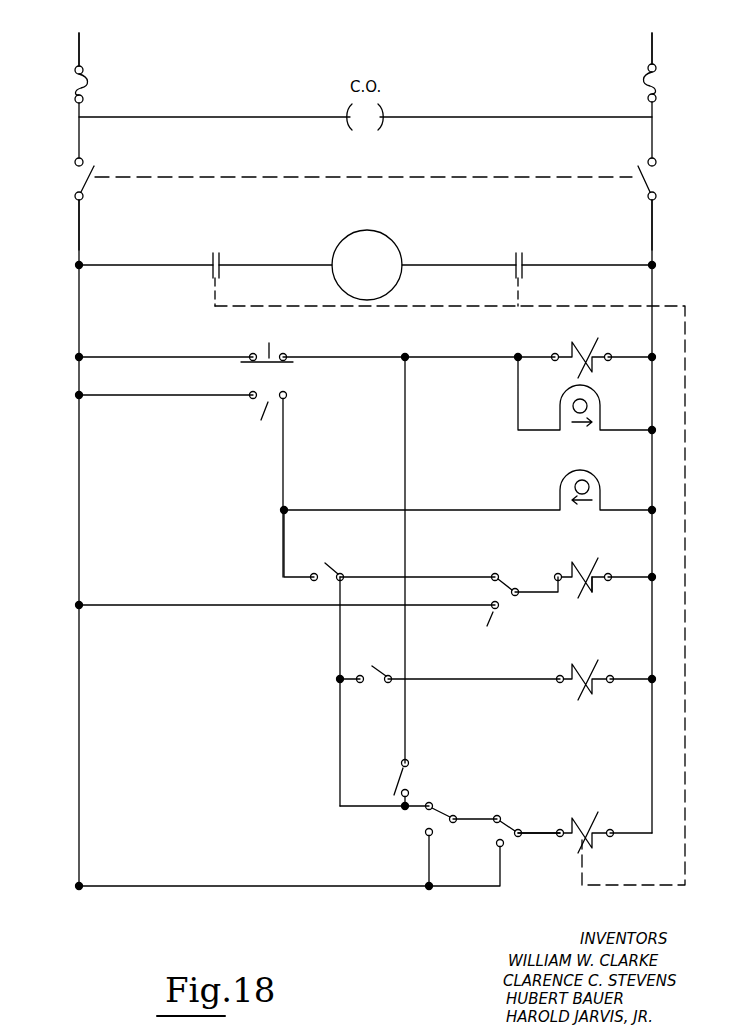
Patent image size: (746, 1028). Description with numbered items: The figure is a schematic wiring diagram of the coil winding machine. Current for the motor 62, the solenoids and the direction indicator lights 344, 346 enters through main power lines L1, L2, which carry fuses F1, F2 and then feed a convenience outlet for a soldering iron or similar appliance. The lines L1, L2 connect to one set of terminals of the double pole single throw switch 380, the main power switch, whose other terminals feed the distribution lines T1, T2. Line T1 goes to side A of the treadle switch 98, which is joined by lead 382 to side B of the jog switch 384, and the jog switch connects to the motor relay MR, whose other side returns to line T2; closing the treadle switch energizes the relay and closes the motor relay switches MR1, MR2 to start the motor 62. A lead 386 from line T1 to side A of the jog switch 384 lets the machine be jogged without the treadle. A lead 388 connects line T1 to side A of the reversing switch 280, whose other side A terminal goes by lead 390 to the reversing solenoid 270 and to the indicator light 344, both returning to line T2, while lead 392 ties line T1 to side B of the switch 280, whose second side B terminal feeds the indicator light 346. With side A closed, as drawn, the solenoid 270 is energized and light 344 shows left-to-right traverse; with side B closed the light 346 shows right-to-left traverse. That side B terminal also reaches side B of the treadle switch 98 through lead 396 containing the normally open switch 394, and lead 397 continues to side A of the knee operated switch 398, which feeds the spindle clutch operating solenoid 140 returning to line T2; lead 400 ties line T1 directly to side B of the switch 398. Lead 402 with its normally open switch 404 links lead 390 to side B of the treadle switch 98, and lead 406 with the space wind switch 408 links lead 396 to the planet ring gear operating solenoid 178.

The motor 62 is at (378, 277).
The treadle switch 98 is at (435, 805).
The spindle clutch operating solenoid 140 is at (594, 594).
The planet ring gear operating solenoid 178 is at (586, 692).
The solenoid 270 is at (565, 358).
The reversing switch 280 is at (283, 373).
The indicator light 344 is at (583, 412).
The indicator light 346 is at (588, 492).
The double pole single throw switch 380 is at (96, 173).
The lead 382 is at (486, 834).
The jog switch 384 is at (506, 820).
The lead 386 is at (425, 834).
The lead 388 is at (125, 357).
The lead 390 is at (335, 357).
The lead 392 is at (192, 398).
The normally open single pole single throw switch 394 is at (340, 549).
The lead 396 is at (283, 543).
The lead 397 is at (415, 577).
The knee operated switch 398 is at (502, 580).
The lead 400 is at (215, 608).
The lead 402 is at (405, 455).
The normally open single pole single throw switch 404 is at (393, 782).
The lead 406 is at (455, 680).
The space wind switch 408 is at (384, 660).
The main power line L1 is at (82, 52).
The main power line L2 is at (648, 48).
The fuse F1 is at (84, 80).
The fuse F2 is at (646, 88).
The line T1 is at (79, 226).
The line T2 is at (652, 227).
The motor relay MR is at (586, 812).
The motor relay switch MR1 is at (210, 257).
The motor relay switch MR2 is at (512, 257).